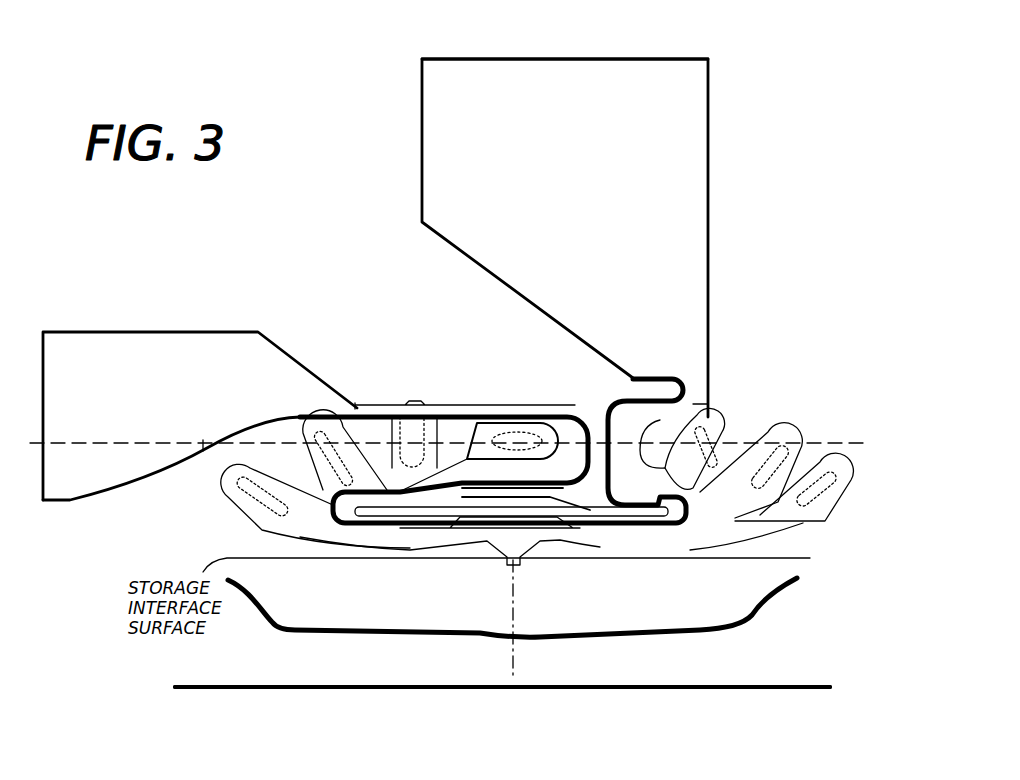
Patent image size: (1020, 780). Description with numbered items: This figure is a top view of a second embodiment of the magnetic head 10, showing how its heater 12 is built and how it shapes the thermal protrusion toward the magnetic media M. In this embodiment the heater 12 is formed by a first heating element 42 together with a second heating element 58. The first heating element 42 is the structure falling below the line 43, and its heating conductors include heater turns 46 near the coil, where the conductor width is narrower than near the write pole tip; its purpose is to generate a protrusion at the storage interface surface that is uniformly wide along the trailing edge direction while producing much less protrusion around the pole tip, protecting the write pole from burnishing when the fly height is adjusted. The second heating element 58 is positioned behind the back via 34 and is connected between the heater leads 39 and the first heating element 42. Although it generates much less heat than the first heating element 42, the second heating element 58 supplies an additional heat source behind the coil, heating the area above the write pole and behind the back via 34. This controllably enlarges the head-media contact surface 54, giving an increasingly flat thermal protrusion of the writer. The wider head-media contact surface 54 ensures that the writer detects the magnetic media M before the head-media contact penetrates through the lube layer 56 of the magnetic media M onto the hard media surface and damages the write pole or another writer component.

The magnetic head 10 is at (743, 160).
The heater 12 is at (670, 272).
The heater leads 39 is at (193, 347).
The line 43 is at (203, 448).
The second heating element 58 is at (357, 406).
The back via 34 is at (527, 430).
The first heating element 42 is at (693, 404).
The heater turns 46 is at (690, 515).
The head-media contact surface 54 is at (393, 635).
The lube layer 56 is at (700, 686).
The magnetic media M is at (766, 690).